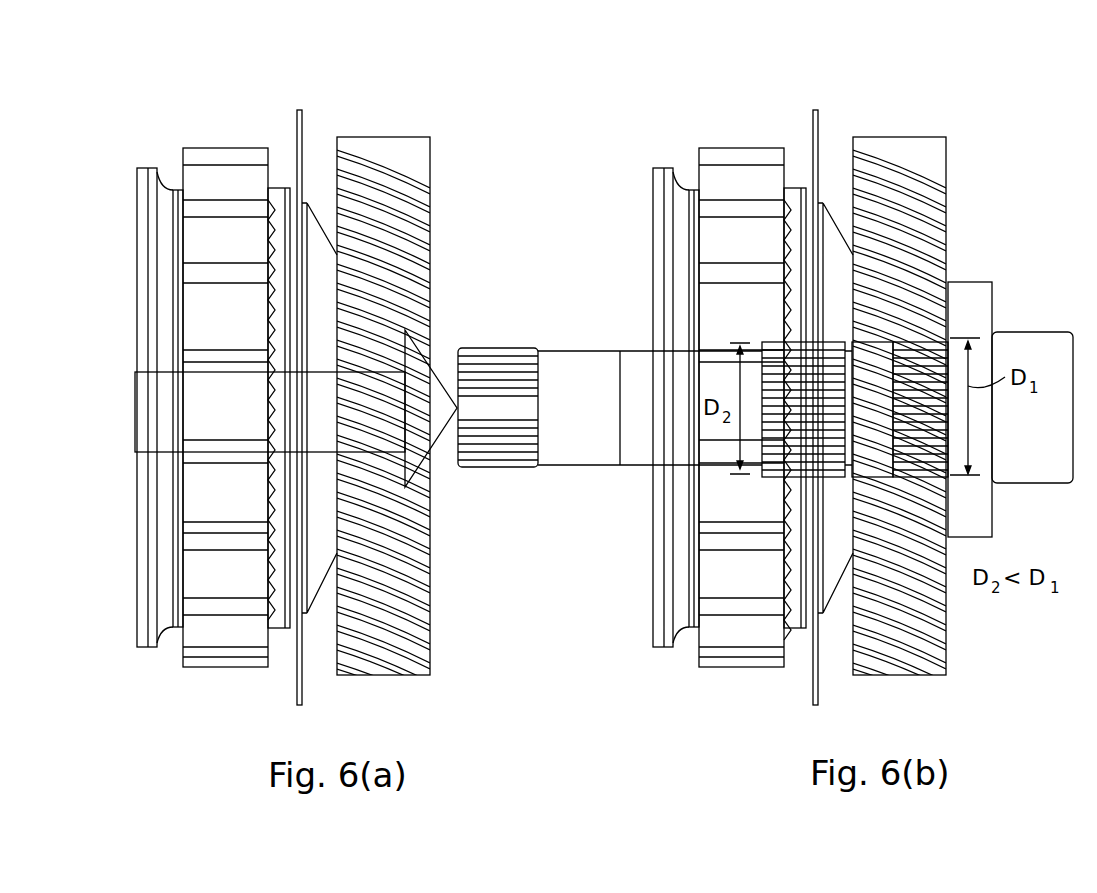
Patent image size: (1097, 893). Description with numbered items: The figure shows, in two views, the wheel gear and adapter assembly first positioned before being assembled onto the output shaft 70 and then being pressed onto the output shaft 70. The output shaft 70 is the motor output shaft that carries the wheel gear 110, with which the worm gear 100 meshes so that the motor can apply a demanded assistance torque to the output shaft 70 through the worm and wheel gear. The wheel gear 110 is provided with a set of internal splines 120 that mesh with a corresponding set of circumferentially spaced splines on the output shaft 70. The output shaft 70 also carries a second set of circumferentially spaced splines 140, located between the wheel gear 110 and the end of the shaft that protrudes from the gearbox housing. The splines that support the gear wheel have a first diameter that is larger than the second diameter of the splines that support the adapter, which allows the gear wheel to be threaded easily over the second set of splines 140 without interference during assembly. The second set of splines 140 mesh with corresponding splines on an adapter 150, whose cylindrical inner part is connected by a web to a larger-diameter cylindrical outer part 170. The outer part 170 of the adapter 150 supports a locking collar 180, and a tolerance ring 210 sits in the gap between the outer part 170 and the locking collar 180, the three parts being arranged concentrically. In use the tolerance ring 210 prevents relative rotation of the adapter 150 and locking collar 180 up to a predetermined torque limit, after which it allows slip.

In FIG. 6B, the output shaft 70 is at (583, 468).
In FIG. 6A, the worm gear 100 is at (365, 152).
In FIG. 6B, the worm gear 100 is at (913, 157).
In FIG. 6B, the wheel gear 110 is at (968, 315).
In FIG. 6B, the internal splines 120 is at (920, 353).
In FIG. 6B, the second set of circumferentially spaced splines 140 is at (807, 352).
In FIG. 6A, the adapter 150 is at (155, 280).
In FIG. 6B, the adapter 150 is at (670, 297).
In FIG. 6A, the cylindrical outer part 170 is at (143, 357).
In FIG. 6A, the locking collar 180 is at (207, 178).
In FIG. 6B, the locking collar 180 is at (713, 173).
In FIG. 6A, the tolerance ring 210 is at (287, 200).
In FIG. 6B, the tolerance ring 210 is at (803, 195).